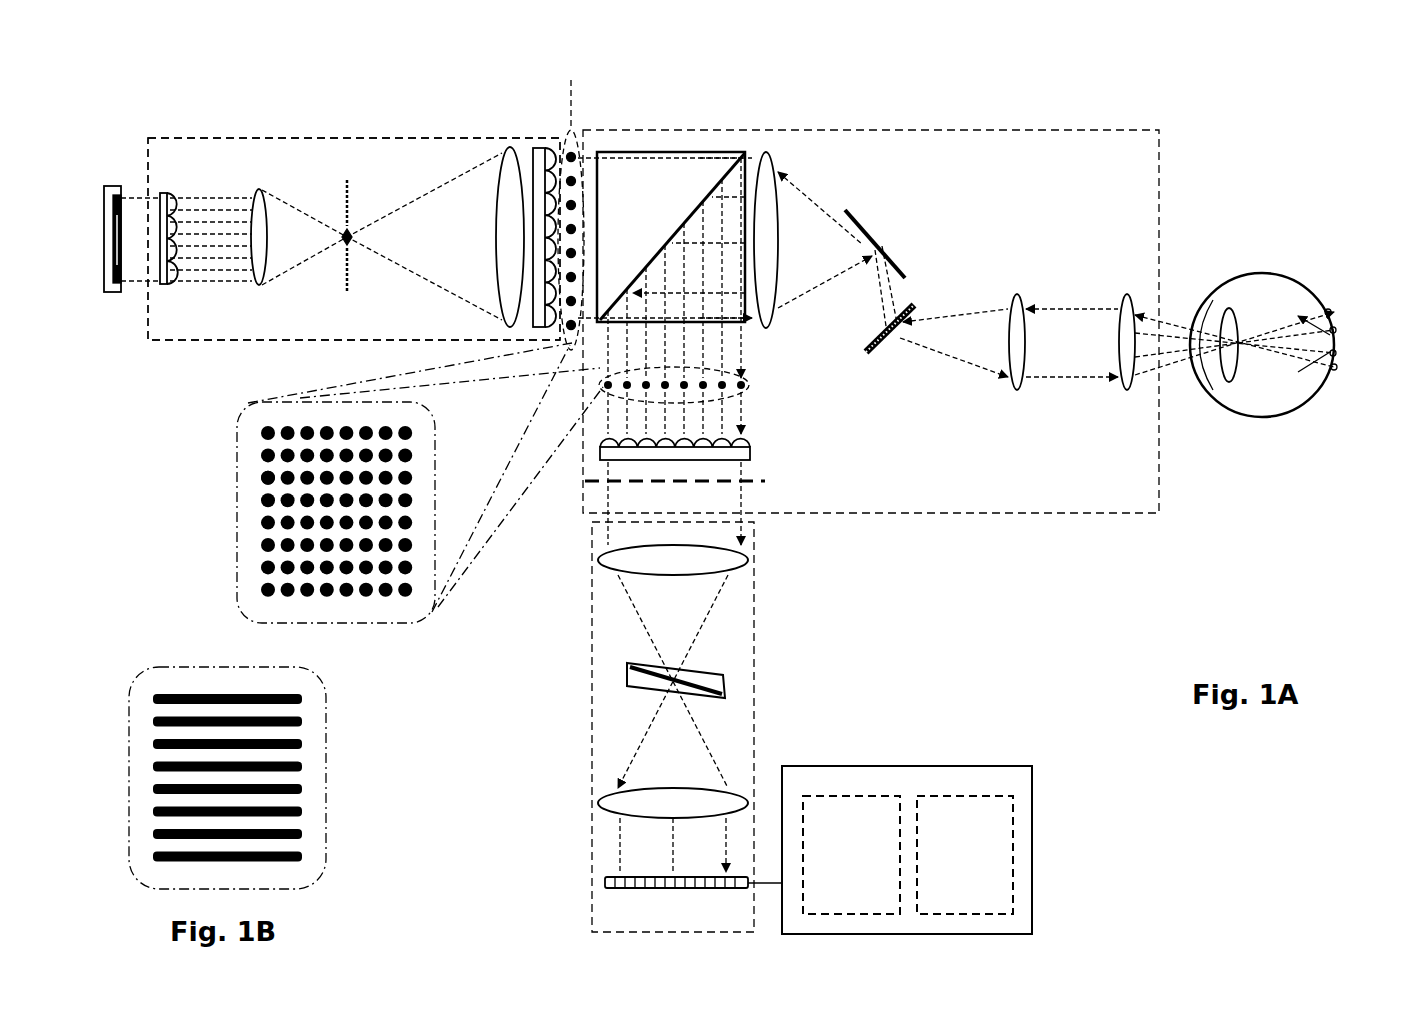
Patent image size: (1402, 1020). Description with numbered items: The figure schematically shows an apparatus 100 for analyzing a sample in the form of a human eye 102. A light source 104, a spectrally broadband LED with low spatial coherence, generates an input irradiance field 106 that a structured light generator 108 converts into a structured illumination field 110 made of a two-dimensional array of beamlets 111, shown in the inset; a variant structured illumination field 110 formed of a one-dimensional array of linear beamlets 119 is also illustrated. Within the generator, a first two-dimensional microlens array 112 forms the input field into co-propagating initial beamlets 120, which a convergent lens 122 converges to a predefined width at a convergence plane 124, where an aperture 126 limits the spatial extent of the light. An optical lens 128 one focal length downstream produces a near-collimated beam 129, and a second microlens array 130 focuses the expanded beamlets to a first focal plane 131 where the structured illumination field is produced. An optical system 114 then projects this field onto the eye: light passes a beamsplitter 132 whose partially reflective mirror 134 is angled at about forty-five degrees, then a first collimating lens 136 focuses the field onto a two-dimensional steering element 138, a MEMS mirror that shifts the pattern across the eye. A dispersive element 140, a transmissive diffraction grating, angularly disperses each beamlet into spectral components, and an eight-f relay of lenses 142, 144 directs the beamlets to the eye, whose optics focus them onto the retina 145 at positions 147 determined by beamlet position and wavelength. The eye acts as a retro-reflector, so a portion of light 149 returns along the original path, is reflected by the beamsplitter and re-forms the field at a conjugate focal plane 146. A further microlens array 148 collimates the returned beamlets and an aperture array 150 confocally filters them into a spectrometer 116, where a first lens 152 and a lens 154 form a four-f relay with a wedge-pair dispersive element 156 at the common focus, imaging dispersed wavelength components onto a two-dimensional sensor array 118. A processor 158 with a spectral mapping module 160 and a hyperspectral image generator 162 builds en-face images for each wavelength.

In FIG. 1A, the apparatus 100 is at (322, 80).
In FIG. 1A, the human eye 102 is at (1281, 274).
In FIG. 1A, the light source 104 is at (107, 186).
In FIG. 1A, the input irradiance field 106 is at (131, 292).
In FIG. 1A, the structured light generator 108 is at (203, 340).
In FIG. 1A, the structured illumination field 110 is at (566, 130).
In FIG. 1B, the structured illumination field 110 is at (327, 805).
In FIG. 1A, the beamlets 111 is at (264, 470).
In FIG. 1A, the first two-dimensional microlens array 112 is at (166, 193).
In FIG. 1A, the optical system 114 is at (962, 130).
In FIG. 1A, the spectrometer 116 is at (754, 636).
In FIG. 1A, the two-dimensional sensor array 118 is at (605, 882).
In FIG. 1B, the linear beamlets 119 is at (302, 767).
In FIG. 1A, the initial beamlets 120 is at (225, 215).
In FIG. 1A, the convergent lens 122 is at (263, 190).
In FIG. 1A, the convergence plane 124 is at (347, 180).
In FIG. 1A, the aperture 126 is at (351, 231).
In FIG. 1A, the optical lens 128 is at (500, 160).
In FIG. 1A, the near-collimated beam 129 is at (528, 160).
In FIG. 1A, the second microlens array 130 is at (545, 150).
In FIG. 1A, the first focal plane 131 is at (571, 80).
In FIG. 1A, the beamsplitter 132 is at (650, 152).
In FIG. 1A, the partially reflective mirror 134 is at (704, 196).
In FIG. 1A, the first collimating lens 136 is at (768, 152).
In FIG. 1A, the two-dimensional steering element 138 is at (858, 212).
In FIG. 1A, the dispersive element 140 is at (872, 360).
In FIG. 1A, the lens 142 is at (1017, 295).
In FIG. 1A, the lens 144 is at (1125, 295).
In FIG. 1A, the retina 145 is at (1336, 314).
In FIG. 1A, the conjugate focal plane 146 is at (750, 385).
In FIG. 1A, the positions 147 is at (1338, 358).
In FIG. 1A, the microlens array 148 is at (752, 446).
In FIG. 1A, the portion of light 149 is at (1302, 380).
In FIG. 1A, the aperture array 150 is at (770, 480).
In FIG. 1A, the first lens 152 is at (750, 560).
In FIG. 1A, the lens 154 is at (600, 801).
In FIG. 1A, the dispersive element 156 is at (627, 670).
In FIG. 1A, the processor 158 is at (1032, 832).
In FIG. 1A, the spectral mapping module 160 is at (852, 796).
In FIG. 1A, the hyperspectral image generator 162 is at (962, 796).